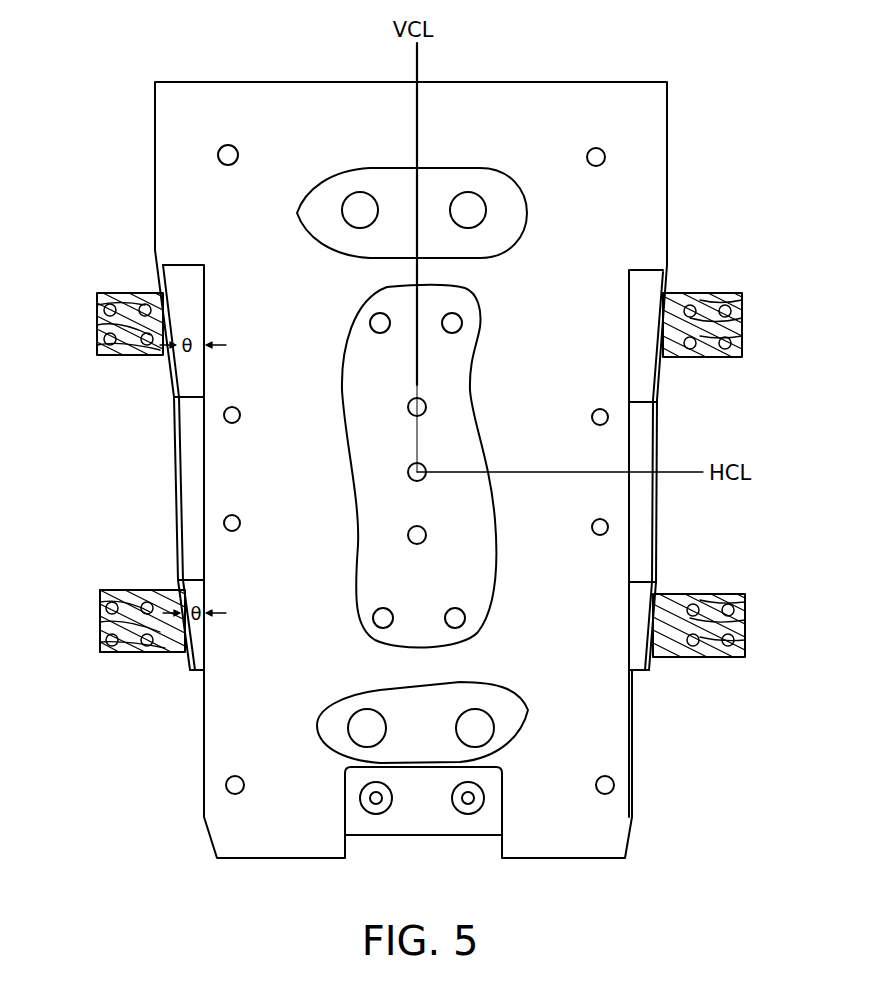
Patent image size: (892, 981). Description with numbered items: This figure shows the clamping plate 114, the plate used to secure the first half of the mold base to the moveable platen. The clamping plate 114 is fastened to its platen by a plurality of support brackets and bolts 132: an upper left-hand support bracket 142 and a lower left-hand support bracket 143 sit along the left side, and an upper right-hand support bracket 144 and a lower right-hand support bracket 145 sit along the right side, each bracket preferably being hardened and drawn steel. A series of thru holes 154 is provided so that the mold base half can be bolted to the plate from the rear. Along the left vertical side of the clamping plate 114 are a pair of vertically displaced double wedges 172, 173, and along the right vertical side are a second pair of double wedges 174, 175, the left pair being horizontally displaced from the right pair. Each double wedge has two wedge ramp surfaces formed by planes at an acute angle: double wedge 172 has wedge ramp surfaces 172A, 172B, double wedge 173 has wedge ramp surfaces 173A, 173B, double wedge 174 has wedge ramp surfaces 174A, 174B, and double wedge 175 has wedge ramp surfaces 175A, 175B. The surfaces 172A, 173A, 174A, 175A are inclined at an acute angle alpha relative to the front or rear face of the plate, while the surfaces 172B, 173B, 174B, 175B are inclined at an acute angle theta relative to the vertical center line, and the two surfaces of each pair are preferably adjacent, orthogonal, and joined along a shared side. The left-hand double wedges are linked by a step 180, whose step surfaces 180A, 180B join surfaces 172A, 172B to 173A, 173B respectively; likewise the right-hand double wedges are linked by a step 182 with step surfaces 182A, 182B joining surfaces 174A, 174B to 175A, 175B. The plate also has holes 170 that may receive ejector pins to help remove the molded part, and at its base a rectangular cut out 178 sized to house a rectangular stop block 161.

The clamping plate 114 is at (499, 62).
The bolts 132 is at (97, 345).
The upper left-hand support bracket 142 is at (127, 292).
The lower left-hand support bracket 143 is at (136, 590).
The upper right-hand support bracket 144 is at (700, 293).
The lower right-hand support bracket 145 is at (700, 594).
The thru holes 154 is at (238, 152).
The stop block 161 is at (423, 826).
The holes 170 is at (474, 303).
The double wedge 172 is at (497, 168).
The wedge ramp surface 172A is at (195, 333).
The wedge ramp surface 172B is at (176, 368).
The double wedge 173 is at (207, 648).
The wedge ramp surface 173A is at (200, 597).
The wedge ramp surface 173B is at (190, 660).
The double wedge 174 is at (627, 302).
The wedge ramp surface 174A is at (636, 363).
The wedge ramp surface 174B is at (658, 372).
The double wedge 175 is at (630, 638).
The wedge ramp surface 175A is at (637, 655).
The wedge ramp surface 175B is at (648, 666).
The cut out 178 is at (503, 805).
The step 180 is at (205, 487).
The step surface 180A is at (204, 463).
The step surface 180B is at (176, 480).
The step 182 is at (630, 483).
The step surface 182A is at (638, 568).
The step surface 182B is at (655, 505).